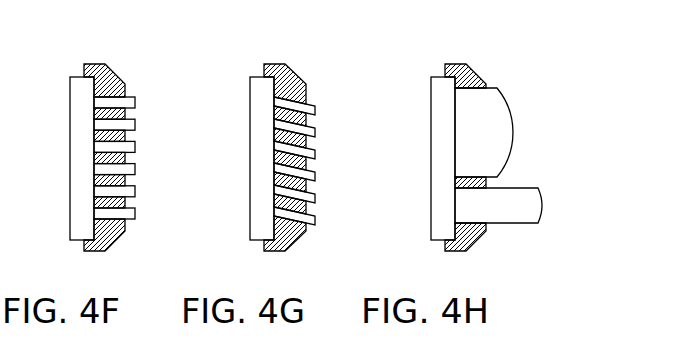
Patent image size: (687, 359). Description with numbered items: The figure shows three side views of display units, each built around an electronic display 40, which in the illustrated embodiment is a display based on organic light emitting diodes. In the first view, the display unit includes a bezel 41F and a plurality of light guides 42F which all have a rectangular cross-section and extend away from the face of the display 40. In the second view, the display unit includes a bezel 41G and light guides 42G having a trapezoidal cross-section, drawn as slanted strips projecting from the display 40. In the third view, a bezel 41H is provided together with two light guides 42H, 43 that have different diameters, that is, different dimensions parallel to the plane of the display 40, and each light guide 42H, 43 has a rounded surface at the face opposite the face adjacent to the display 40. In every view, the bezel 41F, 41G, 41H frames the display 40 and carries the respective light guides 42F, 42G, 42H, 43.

In FIG. 4F, the display 40 is at (72, 110).
In FIG. 4G, the display 40 is at (251, 107).
In FIG. 4H, the display 40 is at (432, 119).
In FIG. 4F, the bezel 41F is at (102, 77).
In FIG. 4G, the bezel 41G is at (283, 78).
In FIG. 4H, the bezel 41H is at (464, 78).
In FIG. 4F, the light guides 42F is at (136, 214).
In FIG. 4G, the light guides 42G is at (315, 220).
In FIG. 4H, the light guide 42H is at (512, 121).
In FIG. 4H, the light guide 43 is at (543, 209).